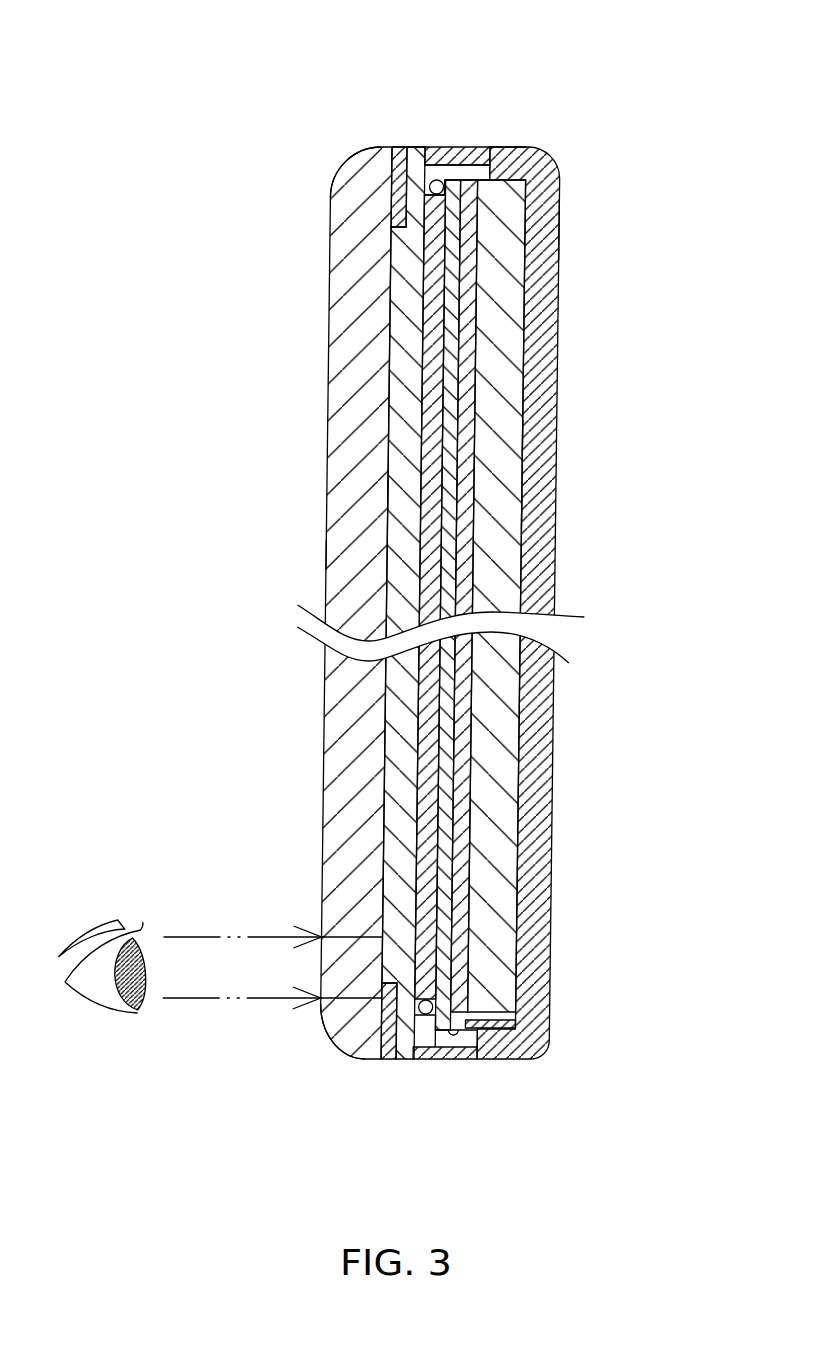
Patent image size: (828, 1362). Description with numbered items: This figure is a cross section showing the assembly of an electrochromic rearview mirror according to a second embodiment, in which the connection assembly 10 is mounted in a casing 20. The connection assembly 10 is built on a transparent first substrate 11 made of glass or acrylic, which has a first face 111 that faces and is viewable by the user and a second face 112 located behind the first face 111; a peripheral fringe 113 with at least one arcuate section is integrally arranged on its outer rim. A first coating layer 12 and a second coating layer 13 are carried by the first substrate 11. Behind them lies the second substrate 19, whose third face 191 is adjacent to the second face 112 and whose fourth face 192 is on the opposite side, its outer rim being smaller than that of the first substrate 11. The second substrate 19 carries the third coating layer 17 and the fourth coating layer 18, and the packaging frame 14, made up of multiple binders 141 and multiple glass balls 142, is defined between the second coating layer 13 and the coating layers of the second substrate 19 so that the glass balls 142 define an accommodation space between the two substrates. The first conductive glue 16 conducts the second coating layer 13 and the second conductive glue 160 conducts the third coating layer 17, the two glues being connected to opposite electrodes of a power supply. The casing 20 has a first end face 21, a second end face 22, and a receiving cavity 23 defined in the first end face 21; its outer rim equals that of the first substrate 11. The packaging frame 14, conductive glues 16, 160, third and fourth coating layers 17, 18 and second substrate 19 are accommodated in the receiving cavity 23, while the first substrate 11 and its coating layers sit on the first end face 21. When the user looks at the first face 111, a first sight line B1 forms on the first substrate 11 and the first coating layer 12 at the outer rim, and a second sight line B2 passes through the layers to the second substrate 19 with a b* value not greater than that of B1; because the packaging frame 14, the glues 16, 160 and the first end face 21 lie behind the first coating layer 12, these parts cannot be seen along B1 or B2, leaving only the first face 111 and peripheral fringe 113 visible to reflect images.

The connection assembly 10 is at (337, 141).
The first substrate 11 is at (362, 315).
The first face 111 is at (338, 555).
The second face 112 is at (400, 495).
The peripheral fringe 113 is at (355, 168).
The first coating layer 12 is at (397, 199).
The second coating layer 13 is at (399, 395).
The packaging frame 14 is at (457, 152).
The binders 141 is at (444, 1007).
The glass balls 142 is at (466, 968).
The first conductive glue 16 is at (437, 180).
The second conductive glue 160 is at (467, 1036).
The third coating layer 17 is at (467, 580).
The fourth coating layer 18 is at (475, 260).
The second substrate 19 is at (512, 350).
The third face 191 is at (514, 437).
The fourth face 192 is at (531, 512).
The casing 20 is at (557, 151).
The first end face 21 is at (400, 147).
The second end face 22 is at (560, 226).
The receiving cavity 23 is at (490, 150).
The first sight line B1 is at (373, 1050).
The second sight line B2 is at (356, 937).